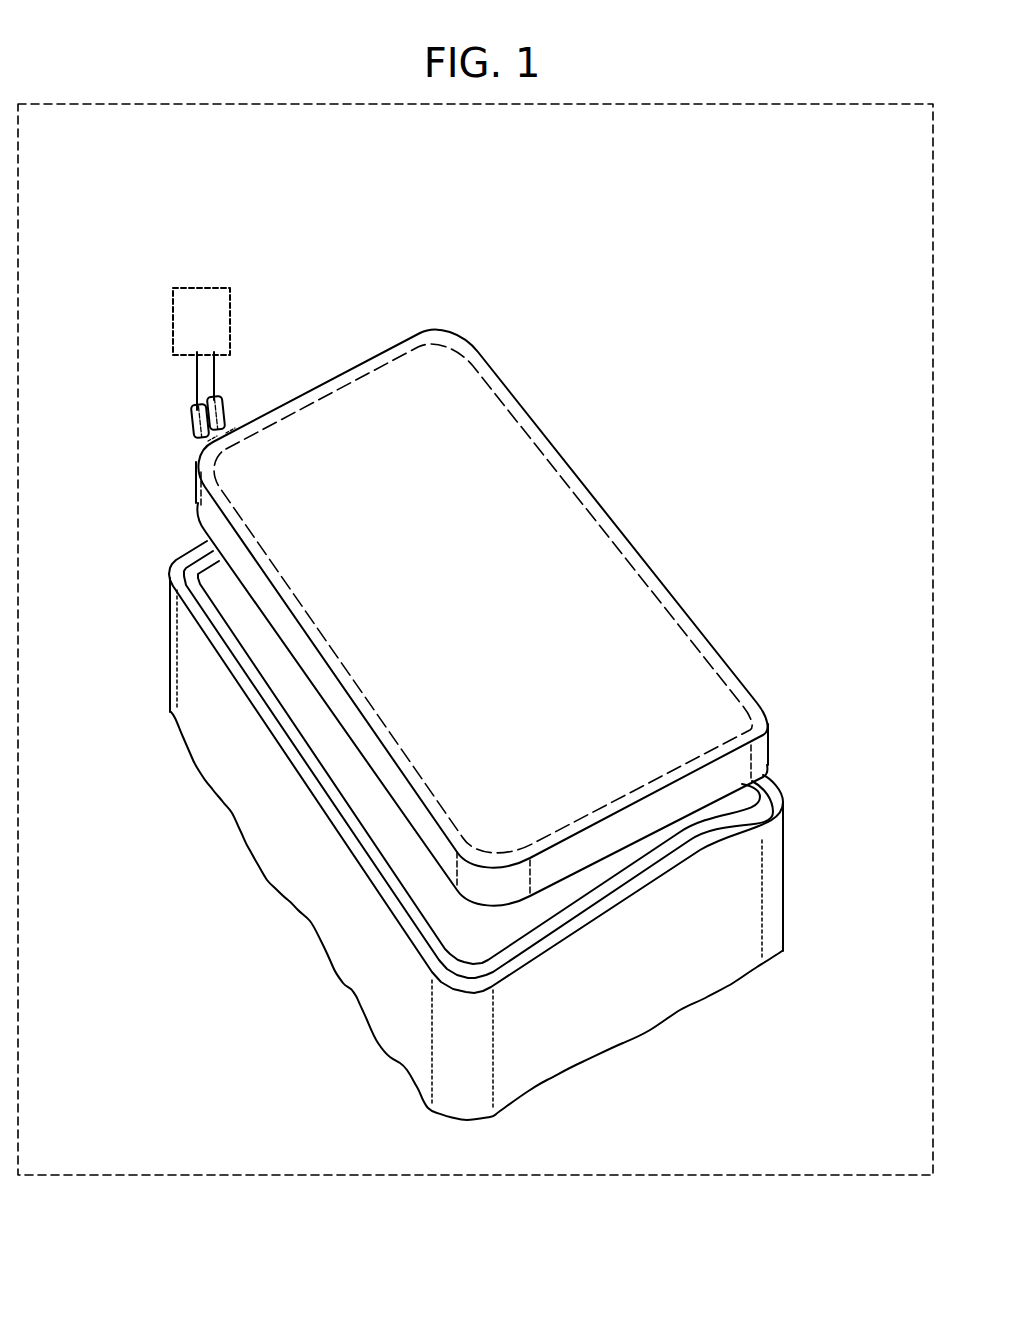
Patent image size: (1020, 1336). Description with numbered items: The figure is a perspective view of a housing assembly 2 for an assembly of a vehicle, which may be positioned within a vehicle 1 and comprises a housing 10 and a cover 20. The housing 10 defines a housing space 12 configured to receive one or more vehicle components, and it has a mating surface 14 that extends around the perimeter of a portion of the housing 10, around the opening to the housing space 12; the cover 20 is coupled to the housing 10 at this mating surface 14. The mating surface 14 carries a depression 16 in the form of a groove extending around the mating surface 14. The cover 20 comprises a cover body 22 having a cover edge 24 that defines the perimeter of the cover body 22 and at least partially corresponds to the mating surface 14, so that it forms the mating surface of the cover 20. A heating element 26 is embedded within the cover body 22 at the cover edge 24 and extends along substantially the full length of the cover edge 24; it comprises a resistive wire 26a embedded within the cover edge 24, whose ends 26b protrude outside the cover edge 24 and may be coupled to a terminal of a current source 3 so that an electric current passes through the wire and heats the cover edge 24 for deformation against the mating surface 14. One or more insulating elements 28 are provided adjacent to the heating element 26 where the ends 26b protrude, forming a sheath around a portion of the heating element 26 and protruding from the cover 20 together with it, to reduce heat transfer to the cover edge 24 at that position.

The vehicle 1 is at (95, 1177).
The housing assembly 2 is at (711, 514).
The current source 3 is at (213, 288).
The housing 10 is at (783, 883).
The housing space 12 is at (465, 930).
The mating surface 14 is at (527, 958).
The depression 16 is at (363, 848).
The cover 20 is at (768, 733).
The cover body 22 is at (643, 617).
The cover edge 24 is at (377, 753).
The heating element 26 is at (518, 414).
The resistive wire 26a is at (578, 487).
The ends of the resistive wire 26b is at (220, 358).
The insulating element 28 is at (228, 401).